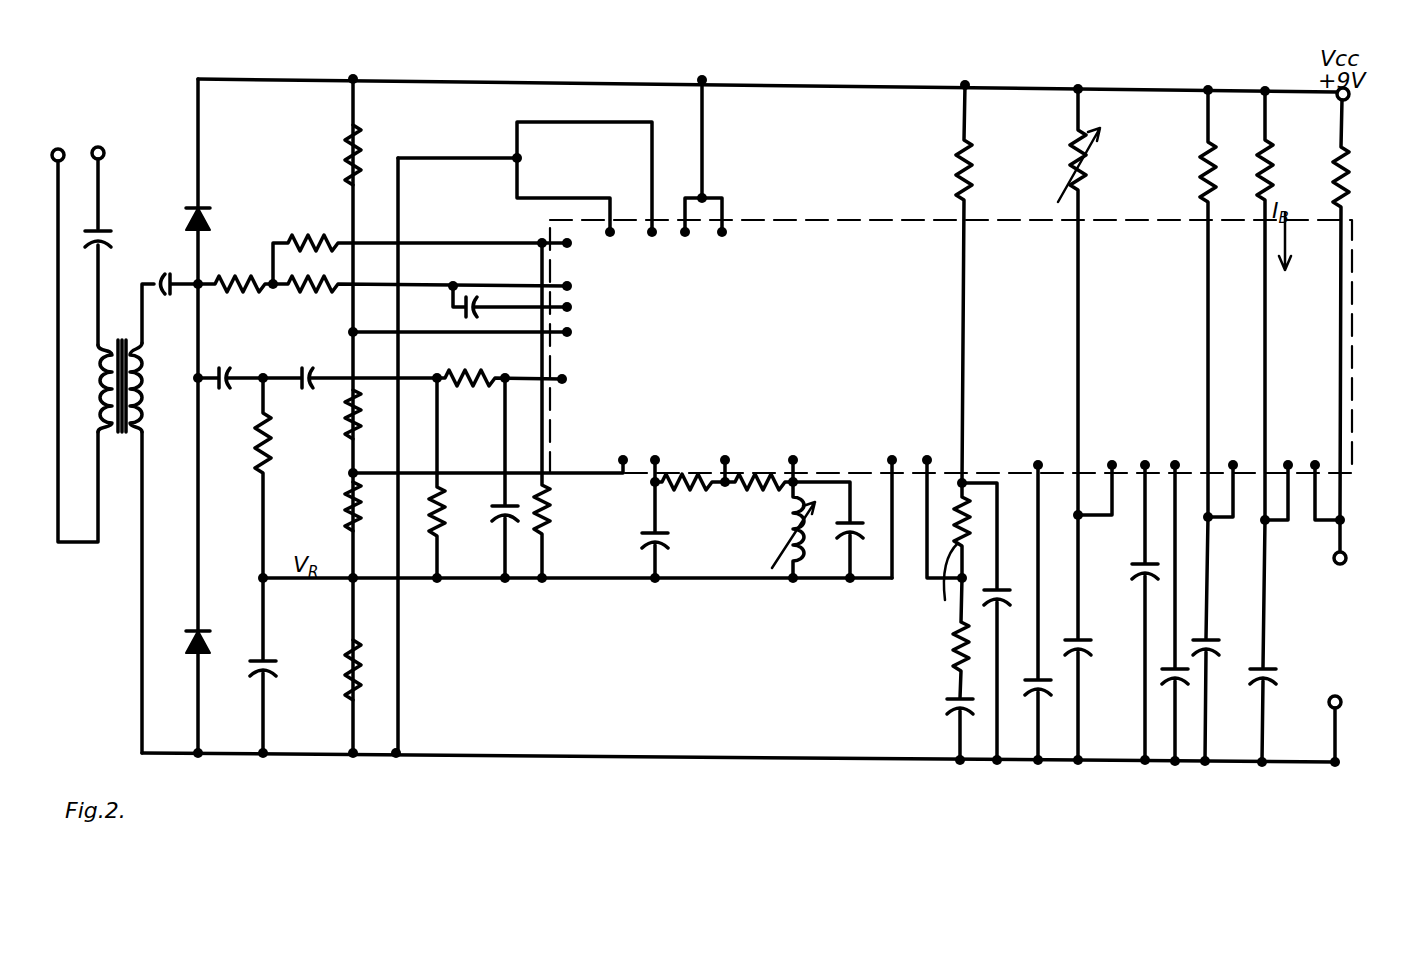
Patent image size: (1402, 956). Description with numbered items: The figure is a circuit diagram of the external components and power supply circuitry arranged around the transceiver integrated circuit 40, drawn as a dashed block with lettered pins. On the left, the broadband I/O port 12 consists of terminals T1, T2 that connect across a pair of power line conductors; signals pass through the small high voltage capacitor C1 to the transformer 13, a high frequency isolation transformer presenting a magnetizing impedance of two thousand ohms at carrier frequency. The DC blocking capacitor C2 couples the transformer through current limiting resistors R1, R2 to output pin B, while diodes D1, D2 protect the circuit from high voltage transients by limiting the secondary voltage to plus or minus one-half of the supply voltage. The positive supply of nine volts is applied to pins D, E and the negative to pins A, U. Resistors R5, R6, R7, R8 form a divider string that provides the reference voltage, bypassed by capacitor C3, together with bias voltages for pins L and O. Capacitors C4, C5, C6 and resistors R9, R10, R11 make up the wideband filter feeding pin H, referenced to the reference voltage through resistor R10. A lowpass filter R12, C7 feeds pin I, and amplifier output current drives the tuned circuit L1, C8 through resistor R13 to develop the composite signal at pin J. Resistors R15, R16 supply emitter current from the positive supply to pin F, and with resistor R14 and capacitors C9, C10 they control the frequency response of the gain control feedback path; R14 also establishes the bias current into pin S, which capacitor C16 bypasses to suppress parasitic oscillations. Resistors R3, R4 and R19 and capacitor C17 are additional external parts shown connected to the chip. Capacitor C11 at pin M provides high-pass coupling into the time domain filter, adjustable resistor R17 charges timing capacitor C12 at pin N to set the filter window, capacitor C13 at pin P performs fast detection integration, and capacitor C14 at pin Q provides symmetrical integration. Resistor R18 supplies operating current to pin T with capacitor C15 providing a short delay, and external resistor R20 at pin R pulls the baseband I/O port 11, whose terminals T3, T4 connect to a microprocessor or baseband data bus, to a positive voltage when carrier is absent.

The broadband I/O port 12 is at (104, 302).
The transformer 13 is at (138, 386).
The integrated circuit implementation 40 is at (768, 406).
The baseband I/O port 11 is at (1327, 662).
The broadband I/O port terminal T1 is at (66, 139).
The broadband I/O port terminal T2 is at (106, 138).
The baseband I/O port terminal T3 is at (1317, 549).
The baseband I/O port terminal T4 is at (1313, 729).
The diode D1 is at (182, 222).
The diode D2 is at (180, 646).
The tuned circuit inductor L1 is at (784, 530).
The current limiting resistor R1 is at (235, 271).
The current limiting resistor R2 is at (420, 301).
The resistor R3 is at (420, 246).
The resistor R4 is at (558, 410).
The divider resistor R5 is at (333, 155).
The divider resistor R6 is at (333, 418).
The divider resistor R7 is at (333, 506).
The divider resistor R8 is at (330, 670).
The wideband filter resistor R9 is at (243, 478).
The wideband filter resistor R10 is at (456, 478).
The wideband filter resistor R11 is at (499, 395).
The lowpass filter resistor R12 is at (690, 497).
The resistor R13 is at (759, 494).
The bias resistor R14 is at (940, 638).
The resistor R15 is at (931, 551).
The resistor R16 is at (942, 284).
The adjustable resistor R17 is at (1064, 302).
The resistor R18 is at (1186, 303).
The resistor R19 is at (1248, 305).
The external resistor R20 is at (1321, 310).
The high voltage capacitor C1 is at (88, 224).
The DC blocking capacitor C2 is at (175, 300).
The bypass capacitor C3 is at (250, 665).
The wideband filter capacitor C4 is at (230, 363).
The wideband filter capacitor C5 is at (350, 363).
The wideband filter capacitor C6 is at (510, 478).
The lowpass filter capacitor C7 is at (665, 530).
The tuned circuit capacitor C8 is at (837, 530).
The capacitor C9 is at (994, 621).
The capacitor C10 is at (940, 729).
The high-pass filter capacitor C11 is at (1027, 612).
The timing capacitor C12 is at (1092, 637).
The bypass capacitor C13 is at (1127, 612).
The integration capacitor C14 is at (1169, 613).
The delay capacitor C15 is at (1219, 639).
The bypass capacitor C16 is at (1248, 641).
The capacitor C17 is at (495, 307).